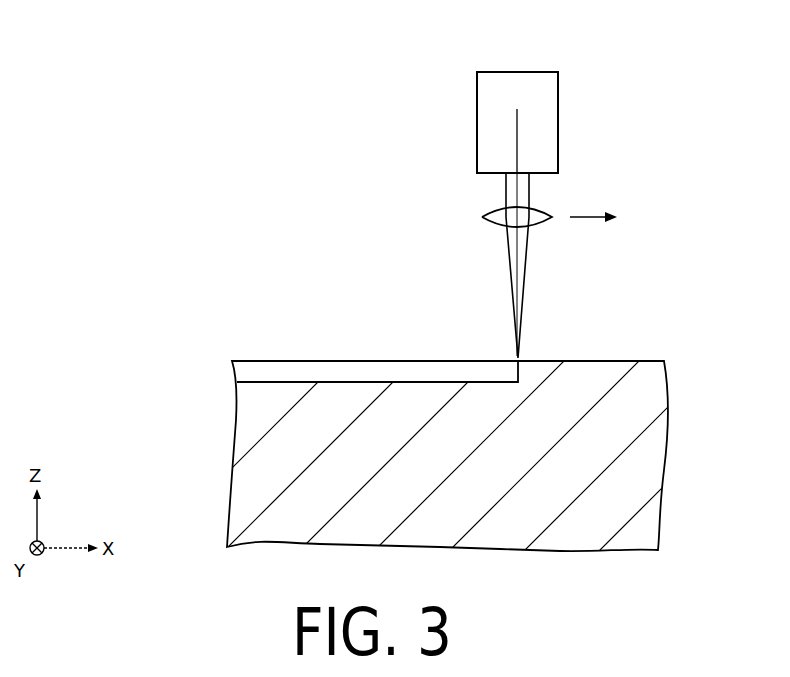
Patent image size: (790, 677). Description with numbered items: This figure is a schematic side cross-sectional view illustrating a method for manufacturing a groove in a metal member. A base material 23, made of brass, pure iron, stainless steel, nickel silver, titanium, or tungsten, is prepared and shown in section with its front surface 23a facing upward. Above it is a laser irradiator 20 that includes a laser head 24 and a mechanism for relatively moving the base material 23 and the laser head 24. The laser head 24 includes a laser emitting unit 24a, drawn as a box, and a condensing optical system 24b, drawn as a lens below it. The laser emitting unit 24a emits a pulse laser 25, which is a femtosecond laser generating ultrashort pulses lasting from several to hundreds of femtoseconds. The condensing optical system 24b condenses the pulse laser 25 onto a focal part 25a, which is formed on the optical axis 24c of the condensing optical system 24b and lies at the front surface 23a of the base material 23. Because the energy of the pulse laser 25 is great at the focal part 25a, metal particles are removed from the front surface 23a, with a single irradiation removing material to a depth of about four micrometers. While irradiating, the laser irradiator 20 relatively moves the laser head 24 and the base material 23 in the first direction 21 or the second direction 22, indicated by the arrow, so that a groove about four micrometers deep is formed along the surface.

The laser irradiator 20 is at (690, 72).
The first direction 21 is at (605, 188).
The second direction 22 is at (590, 215).
The base material 23 is at (641, 455).
The front surface 23a is at (631, 360).
The laser head 24 is at (400, 55).
The laser emitting unit 24a is at (550, 85).
The condensing optical system 24b is at (482, 213).
The optical axis 24c is at (519, 121).
The pulse laser 25 is at (524, 277).
The focal part 25a is at (521, 357).